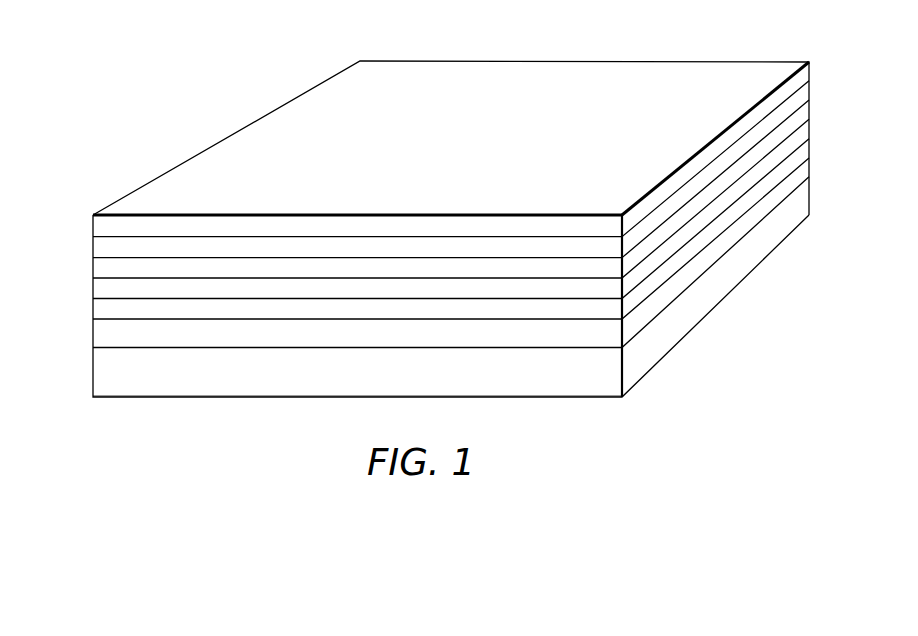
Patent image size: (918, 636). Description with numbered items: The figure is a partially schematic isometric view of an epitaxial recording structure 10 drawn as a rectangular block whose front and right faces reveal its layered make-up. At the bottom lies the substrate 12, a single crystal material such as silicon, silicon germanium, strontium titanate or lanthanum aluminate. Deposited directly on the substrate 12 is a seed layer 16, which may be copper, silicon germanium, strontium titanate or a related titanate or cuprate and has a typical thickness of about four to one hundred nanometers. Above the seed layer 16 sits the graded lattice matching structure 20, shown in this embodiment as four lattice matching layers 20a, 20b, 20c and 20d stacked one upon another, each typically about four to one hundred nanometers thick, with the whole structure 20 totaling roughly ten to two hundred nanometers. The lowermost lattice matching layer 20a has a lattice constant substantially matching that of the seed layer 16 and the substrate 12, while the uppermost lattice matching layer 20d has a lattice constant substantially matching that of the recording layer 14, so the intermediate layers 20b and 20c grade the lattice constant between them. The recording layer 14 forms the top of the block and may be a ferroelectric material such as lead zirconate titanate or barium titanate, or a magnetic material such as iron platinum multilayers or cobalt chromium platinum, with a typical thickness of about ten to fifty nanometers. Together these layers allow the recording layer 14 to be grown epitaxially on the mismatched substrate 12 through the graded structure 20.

The recording structure 10 is at (179, 103).
The substrate 12 is at (110, 375).
The recording layer 14 is at (98, 226).
The seed layer 16 is at (105, 338).
The graded lattice matching structure 20 is at (418, 258).
The lowermost lattice matching layer 20a is at (613, 308).
The lattice matching layer 20b is at (616, 287).
The lattice matching layer 20c is at (616, 267).
The uppermost lattice matching layer 20d is at (613, 243).